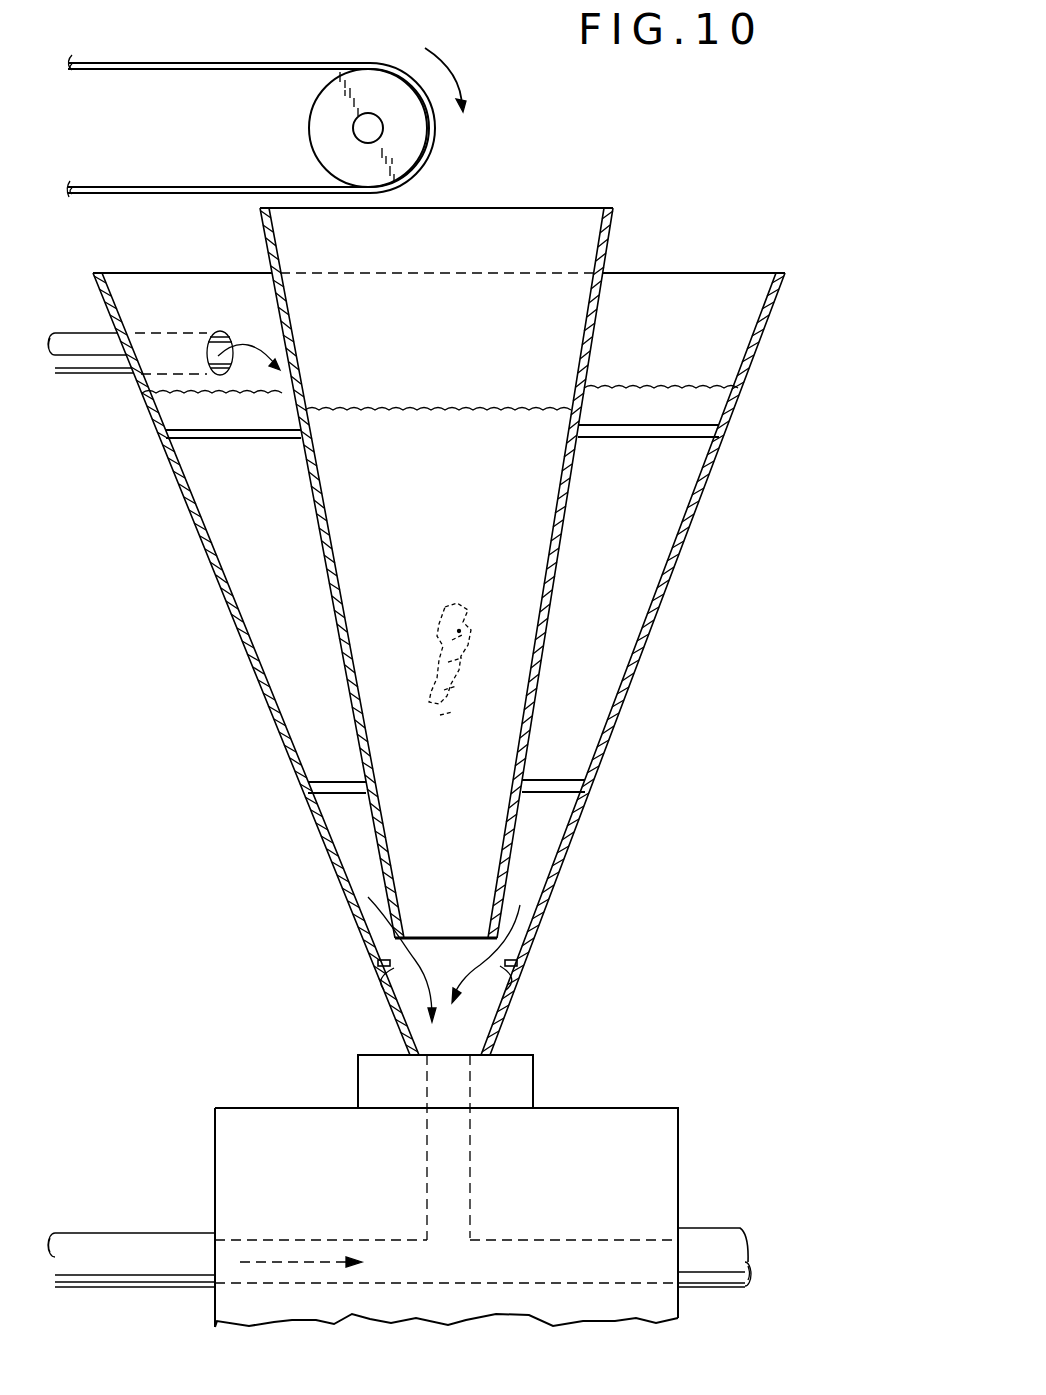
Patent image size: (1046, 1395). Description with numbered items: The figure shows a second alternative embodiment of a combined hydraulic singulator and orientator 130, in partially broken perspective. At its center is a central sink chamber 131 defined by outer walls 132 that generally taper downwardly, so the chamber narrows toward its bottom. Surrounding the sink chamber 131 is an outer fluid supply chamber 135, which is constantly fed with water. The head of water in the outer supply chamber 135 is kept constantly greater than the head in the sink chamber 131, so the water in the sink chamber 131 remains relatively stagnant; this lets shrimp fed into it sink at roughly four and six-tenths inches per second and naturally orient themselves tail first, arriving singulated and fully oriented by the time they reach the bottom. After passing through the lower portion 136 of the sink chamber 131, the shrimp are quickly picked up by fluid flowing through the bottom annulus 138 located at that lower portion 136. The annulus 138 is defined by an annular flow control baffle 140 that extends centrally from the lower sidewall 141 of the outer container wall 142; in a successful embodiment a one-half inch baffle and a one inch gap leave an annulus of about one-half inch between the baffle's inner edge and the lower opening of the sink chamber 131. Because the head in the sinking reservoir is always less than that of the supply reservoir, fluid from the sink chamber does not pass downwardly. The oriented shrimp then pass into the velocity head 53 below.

The hydraulic singulator and orientator 130 is at (778, 208).
The central sink chamber 131 is at (464, 505).
The outer walls 132 is at (578, 462).
The outer fluid supply chamber 135 is at (633, 583).
The lower portion 136 is at (478, 914).
The bottom annulus 138 is at (380, 943).
The flow control baffle 140 is at (383, 995).
The lower sidewall 141 is at (504, 1020).
The outer container wall 142 is at (580, 823).
The velocity head 53 is at (452, 1197).